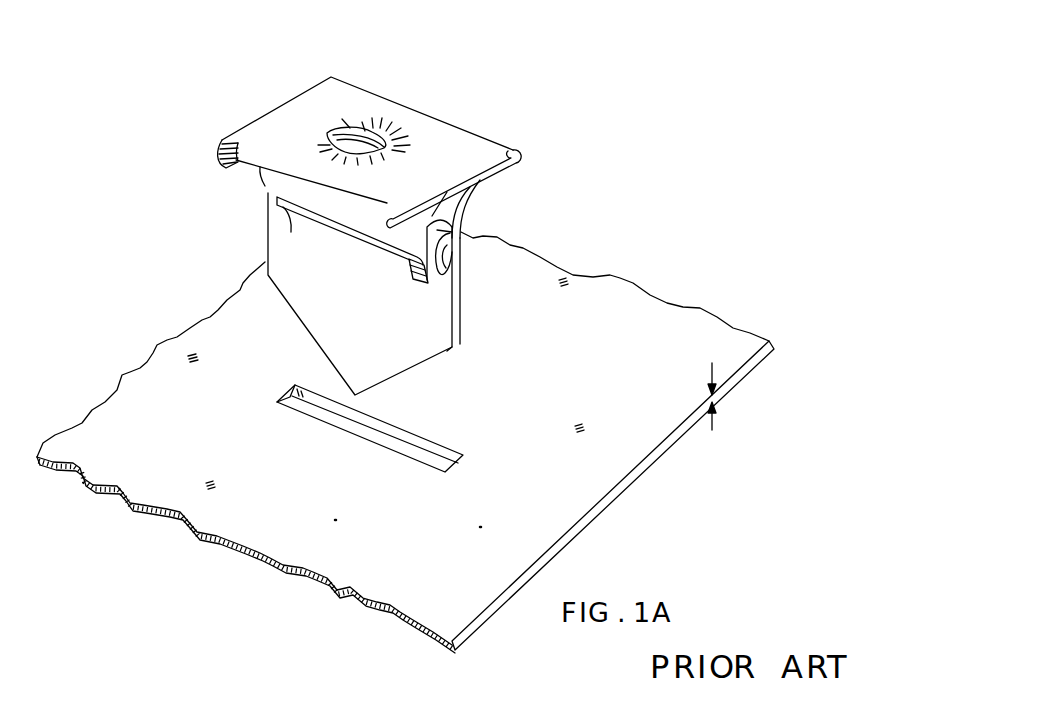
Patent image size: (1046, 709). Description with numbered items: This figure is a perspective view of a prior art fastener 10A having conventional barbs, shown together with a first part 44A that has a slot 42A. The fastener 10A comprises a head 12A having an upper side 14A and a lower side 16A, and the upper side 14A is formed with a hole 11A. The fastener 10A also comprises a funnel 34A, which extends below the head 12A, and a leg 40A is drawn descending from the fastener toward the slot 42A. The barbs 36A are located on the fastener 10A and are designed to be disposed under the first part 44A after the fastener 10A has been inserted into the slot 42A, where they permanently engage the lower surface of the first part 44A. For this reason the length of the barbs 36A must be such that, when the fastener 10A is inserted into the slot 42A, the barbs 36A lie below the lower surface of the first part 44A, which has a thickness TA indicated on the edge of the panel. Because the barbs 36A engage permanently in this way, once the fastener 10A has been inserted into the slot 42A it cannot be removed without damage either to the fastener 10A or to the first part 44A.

The fastener 10A is at (388, 203).
The hole 11A is at (357, 128).
The head 12A is at (263, 167).
The upper side 14A is at (414, 107).
The lower side 16A is at (483, 176).
The funnel 34A is at (366, 253).
The barbs 36A is at (471, 230).
The vertical leg 40A is at (455, 272).
The slot 42A is at (374, 433).
The first part 44A is at (640, 287).
The thickness TA is at (718, 393).